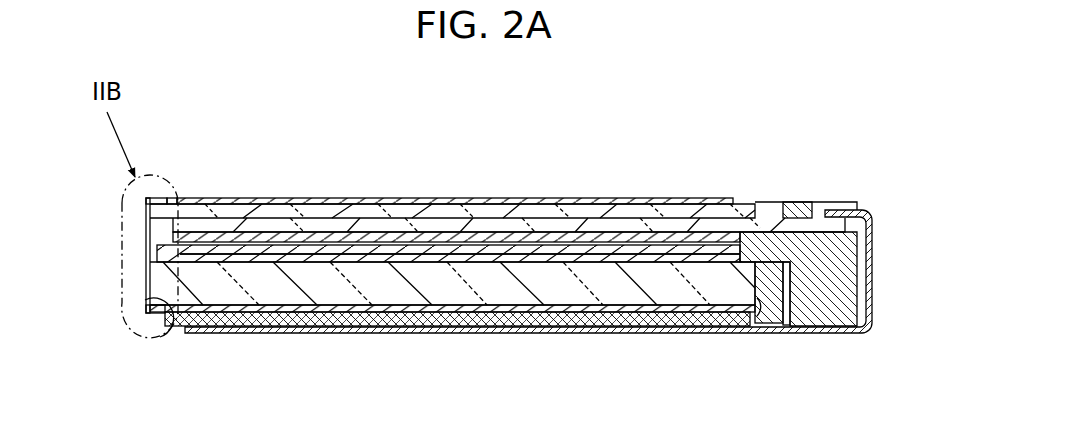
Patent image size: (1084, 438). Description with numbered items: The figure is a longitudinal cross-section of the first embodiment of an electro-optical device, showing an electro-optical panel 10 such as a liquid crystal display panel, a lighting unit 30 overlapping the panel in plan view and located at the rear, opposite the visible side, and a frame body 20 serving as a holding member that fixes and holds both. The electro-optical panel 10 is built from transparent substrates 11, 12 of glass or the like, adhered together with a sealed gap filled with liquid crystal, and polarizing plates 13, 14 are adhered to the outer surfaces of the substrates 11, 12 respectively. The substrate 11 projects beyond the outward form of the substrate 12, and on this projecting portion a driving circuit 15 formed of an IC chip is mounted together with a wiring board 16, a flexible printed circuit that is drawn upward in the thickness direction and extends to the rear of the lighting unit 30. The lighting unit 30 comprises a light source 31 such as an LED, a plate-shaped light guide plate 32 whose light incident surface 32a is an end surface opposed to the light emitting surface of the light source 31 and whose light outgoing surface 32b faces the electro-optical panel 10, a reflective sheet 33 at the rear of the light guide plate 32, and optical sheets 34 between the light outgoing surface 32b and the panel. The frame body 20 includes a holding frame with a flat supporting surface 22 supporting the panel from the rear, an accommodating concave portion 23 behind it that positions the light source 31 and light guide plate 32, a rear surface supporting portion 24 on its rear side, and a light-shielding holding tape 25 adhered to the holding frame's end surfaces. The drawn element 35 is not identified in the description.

The electro-optical panel 10 is at (497, 170).
The transparent substrate 11 is at (273, 222).
The transparent substrate 12 is at (354, 224).
The polarizing plate 13 is at (447, 238).
The polarizing plate 14 is at (523, 198).
The driving circuit 15 is at (797, 207).
The wiring board 16 is at (873, 268).
The frame body 20 is at (146, 268).
The supporting surface 22 is at (768, 228).
The accommodating concave portion 23 is at (790, 293).
The rear surface supporting portion 24 is at (443, 321).
The light-shielding holding tape 25 is at (170, 198).
The lighting unit 30 is at (494, 289).
The light source 31 is at (798, 310).
The light guide plate 32 is at (555, 293).
The light incident surface 32a is at (757, 298).
The light outgoing surface 32b is at (590, 256).
The reflective sheet 33 is at (352, 308).
The optical sheet 34 is at (253, 262).
The light source substrate 35 is at (781, 282).